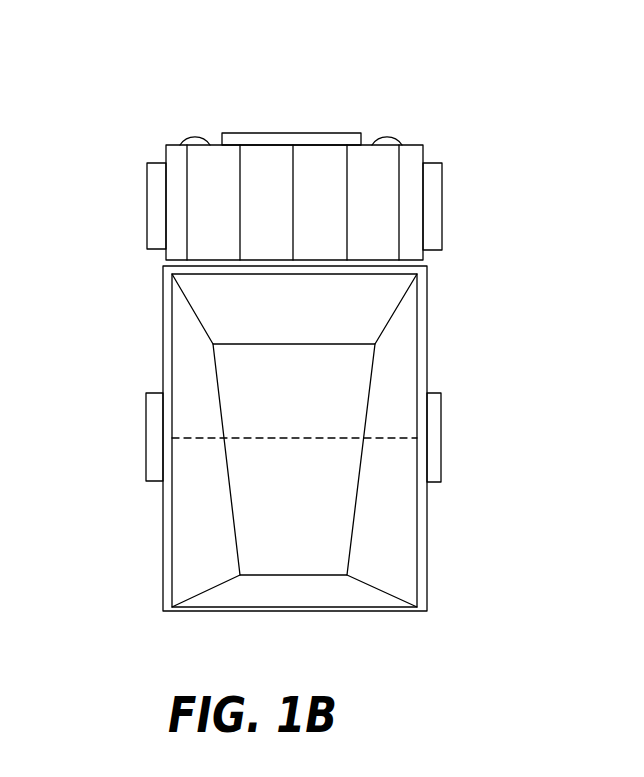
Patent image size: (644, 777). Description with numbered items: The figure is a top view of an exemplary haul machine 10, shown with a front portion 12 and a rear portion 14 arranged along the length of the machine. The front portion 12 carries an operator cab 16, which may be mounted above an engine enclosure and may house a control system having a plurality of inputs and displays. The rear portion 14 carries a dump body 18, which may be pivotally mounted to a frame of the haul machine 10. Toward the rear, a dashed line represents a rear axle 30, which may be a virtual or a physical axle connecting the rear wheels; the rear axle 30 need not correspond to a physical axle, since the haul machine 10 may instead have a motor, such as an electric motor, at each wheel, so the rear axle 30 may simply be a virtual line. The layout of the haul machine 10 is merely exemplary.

The haul machine 10 is at (577, 185).
The front portion 12 is at (128, 115).
The rear portion 14 is at (470, 545).
The operator cab 16 is at (363, 143).
The dump body 18 is at (427, 508).
The rear axle 30 is at (205, 438).